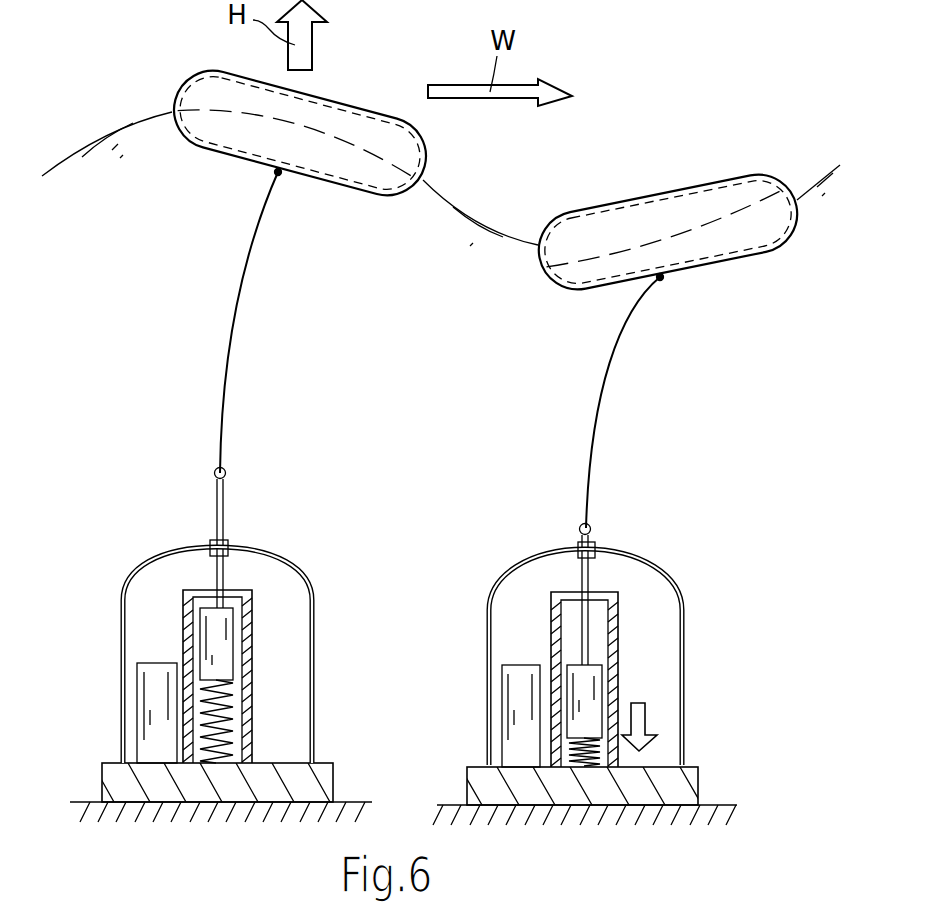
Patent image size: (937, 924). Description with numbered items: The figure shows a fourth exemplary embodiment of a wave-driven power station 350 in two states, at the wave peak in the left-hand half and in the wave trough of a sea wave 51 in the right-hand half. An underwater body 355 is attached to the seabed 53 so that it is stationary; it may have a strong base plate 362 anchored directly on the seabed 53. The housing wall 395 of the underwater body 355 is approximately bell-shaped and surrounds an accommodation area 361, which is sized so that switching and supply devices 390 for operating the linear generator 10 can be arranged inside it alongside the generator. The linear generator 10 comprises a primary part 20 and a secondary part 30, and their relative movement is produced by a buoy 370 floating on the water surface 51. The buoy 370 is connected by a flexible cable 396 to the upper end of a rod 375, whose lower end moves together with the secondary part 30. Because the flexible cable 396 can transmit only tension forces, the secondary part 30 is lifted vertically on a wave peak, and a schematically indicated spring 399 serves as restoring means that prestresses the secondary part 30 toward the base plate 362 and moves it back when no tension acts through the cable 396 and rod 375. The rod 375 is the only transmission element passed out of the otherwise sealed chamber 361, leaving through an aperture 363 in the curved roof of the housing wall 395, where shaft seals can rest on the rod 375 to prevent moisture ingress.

The linear generator 10 is at (222, 628).
The primary part 20 is at (253, 658).
The secondary part 30 is at (236, 632).
The water surface 51 is at (125, 125).
The seabed 53 is at (360, 803).
The wave-driven power station 350 is at (715, 453).
The underwater body 355 is at (214, 612).
The accommodation area 361 is at (168, 573).
The base plate 362 is at (112, 778).
The aperture 363 is at (227, 545).
The buoy 370 is at (333, 120).
The rod 375 is at (215, 508).
The switching and supply devices 390 is at (170, 629).
The housing wall 395 is at (133, 570).
The flexible cable 396 is at (235, 287).
The spring 399 is at (232, 713).